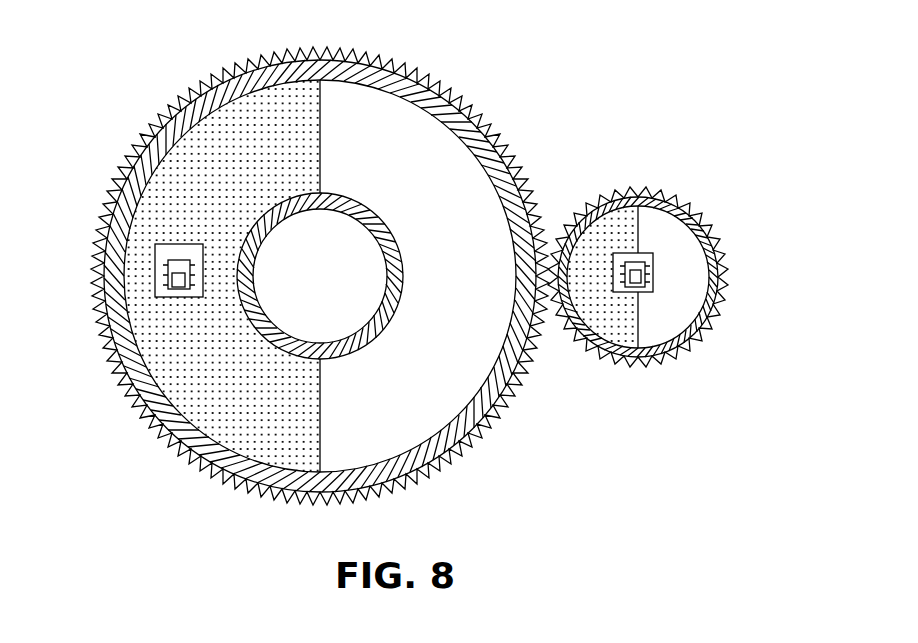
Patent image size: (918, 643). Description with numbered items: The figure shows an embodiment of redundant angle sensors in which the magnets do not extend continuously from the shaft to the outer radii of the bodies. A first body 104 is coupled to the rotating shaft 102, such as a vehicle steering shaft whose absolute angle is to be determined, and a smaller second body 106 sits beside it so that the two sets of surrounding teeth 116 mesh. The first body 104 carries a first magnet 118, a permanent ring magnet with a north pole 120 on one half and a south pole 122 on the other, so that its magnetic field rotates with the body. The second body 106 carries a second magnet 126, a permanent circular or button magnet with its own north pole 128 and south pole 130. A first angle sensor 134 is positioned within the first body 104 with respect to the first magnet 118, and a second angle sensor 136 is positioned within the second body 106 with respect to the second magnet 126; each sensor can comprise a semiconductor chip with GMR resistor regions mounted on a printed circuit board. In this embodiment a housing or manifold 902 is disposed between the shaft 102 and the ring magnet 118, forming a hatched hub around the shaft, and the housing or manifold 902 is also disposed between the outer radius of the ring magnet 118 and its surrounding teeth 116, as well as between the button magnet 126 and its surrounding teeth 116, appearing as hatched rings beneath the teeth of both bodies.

The rotating shaft 102 is at (336, 288).
The first body 104 is at (145, 99).
The second body 106 is at (707, 187).
The teeth 116 is at (462, 446).
The first magnet 118 is at (320, 94).
The north pole 120 is at (216, 367).
The south pole 122 is at (451, 367).
The second magnet 126 is at (639, 214).
The north pole 128 is at (627, 250).
The south pole 130 is at (680, 250).
The first angle sensor 134 is at (170, 284).
The second angle sensor 136 is at (651, 288).
The housing or manifold 902 is at (386, 78).